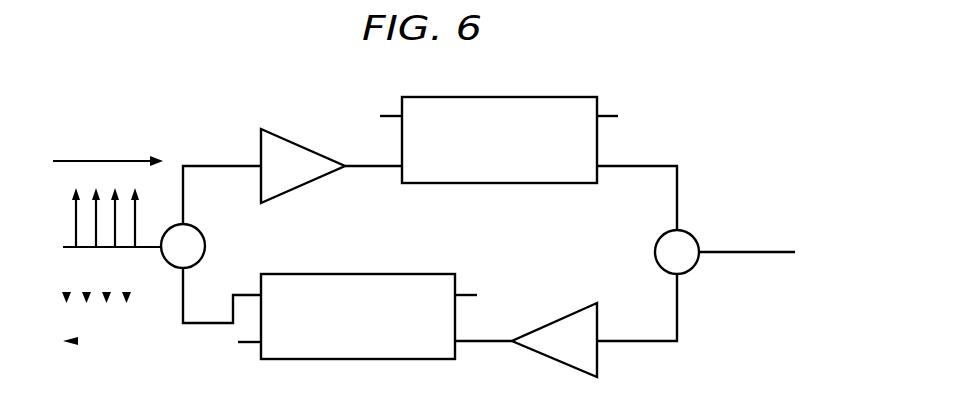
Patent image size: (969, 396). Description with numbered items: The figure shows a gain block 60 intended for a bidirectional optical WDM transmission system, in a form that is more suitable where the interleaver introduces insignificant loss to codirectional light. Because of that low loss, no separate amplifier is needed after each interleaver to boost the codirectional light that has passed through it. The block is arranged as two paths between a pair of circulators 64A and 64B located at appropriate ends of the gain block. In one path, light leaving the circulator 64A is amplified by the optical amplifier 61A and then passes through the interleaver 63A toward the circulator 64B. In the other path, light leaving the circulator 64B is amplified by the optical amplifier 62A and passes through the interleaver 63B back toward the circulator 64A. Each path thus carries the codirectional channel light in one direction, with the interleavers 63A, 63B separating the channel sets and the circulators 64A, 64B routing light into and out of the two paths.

The gain block 60 is at (419, 72).
The optical amplifier 61A is at (305, 147).
The optical amplifier 62A is at (558, 320).
The interleaver 63A is at (495, 183).
The interleaver 63B is at (363, 274).
The circulator 64A is at (205, 246).
The circulator 64B is at (697, 236).